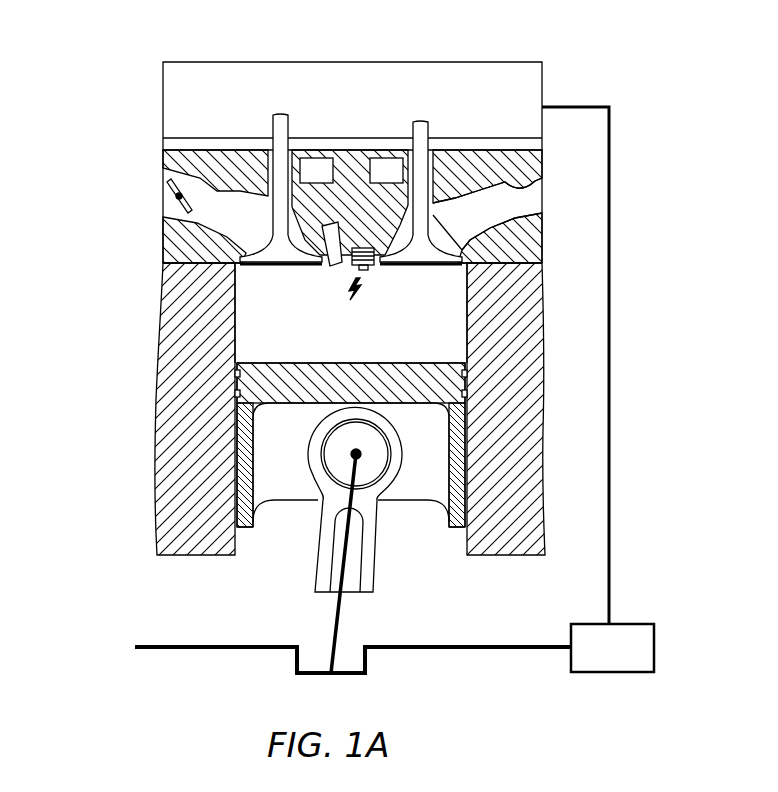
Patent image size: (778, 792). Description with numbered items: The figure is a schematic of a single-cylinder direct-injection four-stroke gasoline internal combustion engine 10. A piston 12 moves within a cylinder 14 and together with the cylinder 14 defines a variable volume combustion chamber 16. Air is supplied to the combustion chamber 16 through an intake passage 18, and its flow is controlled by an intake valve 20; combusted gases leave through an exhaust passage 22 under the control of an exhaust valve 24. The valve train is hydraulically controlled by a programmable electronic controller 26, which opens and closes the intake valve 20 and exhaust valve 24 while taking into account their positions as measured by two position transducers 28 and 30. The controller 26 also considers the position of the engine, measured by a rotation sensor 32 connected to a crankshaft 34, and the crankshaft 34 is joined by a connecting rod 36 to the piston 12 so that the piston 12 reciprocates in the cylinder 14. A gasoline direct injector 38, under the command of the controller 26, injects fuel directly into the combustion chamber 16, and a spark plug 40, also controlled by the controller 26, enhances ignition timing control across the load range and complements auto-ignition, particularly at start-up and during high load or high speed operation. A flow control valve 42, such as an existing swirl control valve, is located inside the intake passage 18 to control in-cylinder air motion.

The internal combustion engine 10 is at (143, 85).
The piston 12 is at (240, 386).
The cylinder 14 is at (170, 374).
The combustion chamber 16 is at (443, 342).
The intake passage 18 is at (190, 177).
The intake valve 20 is at (277, 260).
The exhaust passage 22 is at (513, 193).
The exhaust valve 24 is at (425, 258).
The electronic controller 26 is at (368, 117).
The position transducer 28 is at (316, 168).
The position transducer 30 is at (387, 168).
The rotation sensor 32 is at (628, 630).
The crankshaft 34 is at (297, 663).
The connecting rod 36 is at (320, 554).
The gasoline direct injector 38 is at (325, 266).
The spark plug 40 is at (375, 268).
The flow control valve 42 is at (170, 183).